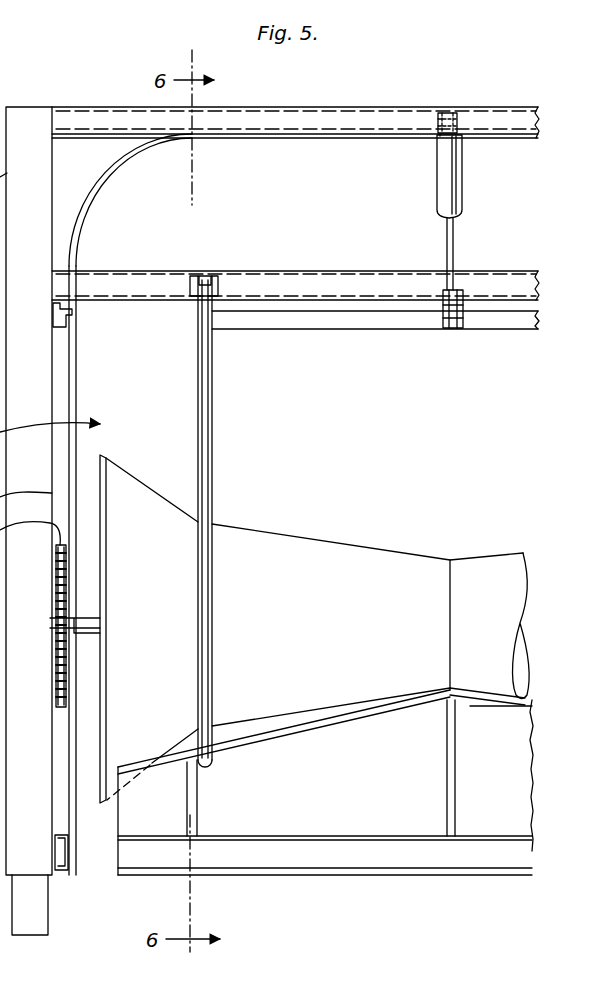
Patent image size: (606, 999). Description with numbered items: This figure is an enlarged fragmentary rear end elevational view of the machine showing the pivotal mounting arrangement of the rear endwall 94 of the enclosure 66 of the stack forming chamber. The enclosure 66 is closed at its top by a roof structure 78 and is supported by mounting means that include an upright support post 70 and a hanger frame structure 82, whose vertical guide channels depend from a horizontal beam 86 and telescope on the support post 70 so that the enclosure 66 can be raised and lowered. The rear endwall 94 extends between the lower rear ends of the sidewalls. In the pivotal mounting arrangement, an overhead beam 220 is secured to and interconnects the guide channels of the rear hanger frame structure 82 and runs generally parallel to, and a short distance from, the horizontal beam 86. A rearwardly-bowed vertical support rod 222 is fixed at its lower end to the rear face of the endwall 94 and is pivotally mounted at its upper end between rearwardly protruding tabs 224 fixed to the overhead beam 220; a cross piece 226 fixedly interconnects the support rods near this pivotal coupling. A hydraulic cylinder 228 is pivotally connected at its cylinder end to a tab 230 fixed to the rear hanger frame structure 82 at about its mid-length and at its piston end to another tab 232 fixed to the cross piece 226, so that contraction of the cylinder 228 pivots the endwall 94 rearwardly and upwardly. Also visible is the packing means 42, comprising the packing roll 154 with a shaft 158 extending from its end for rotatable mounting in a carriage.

The hanger frame structure 82 is at (55, 104).
The horizontal beam 86 is at (276, 107).
The enclosure 66 is at (357, 105).
The tab 230 is at (451, 112).
The hydraulic cylinder 228 is at (440, 161).
The tab 232 is at (449, 330).
The roof structure 78 is at (111, 171).
The overhead beam 220 is at (148, 270).
The tabs 224 is at (201, 272).
The cross piece 226 is at (254, 324).
The vertical support rod 222 is at (211, 417).
The packing roll 154 is at (269, 533).
The packing means 42 is at (383, 537).
The shaft 158 is at (87, 615).
The rear endwall 94 is at (362, 788).
The support post 70 is at (49, 908).